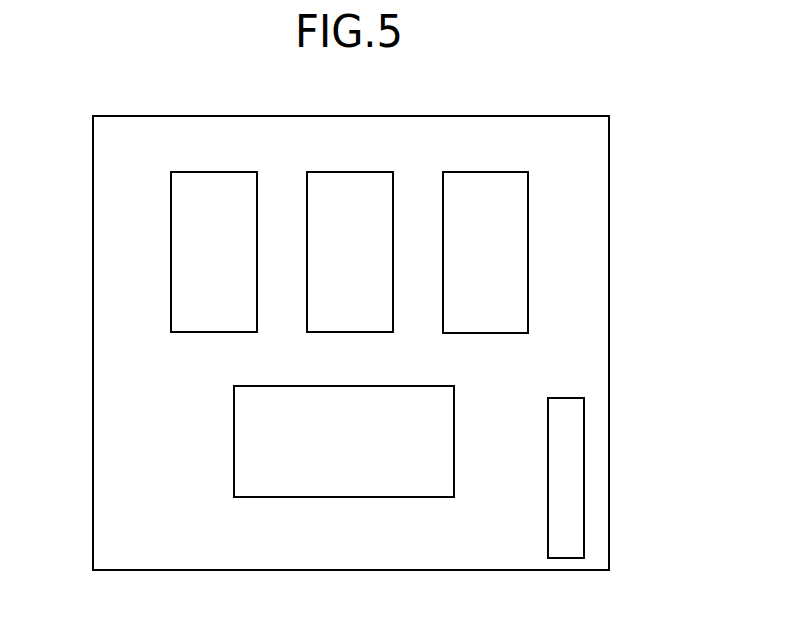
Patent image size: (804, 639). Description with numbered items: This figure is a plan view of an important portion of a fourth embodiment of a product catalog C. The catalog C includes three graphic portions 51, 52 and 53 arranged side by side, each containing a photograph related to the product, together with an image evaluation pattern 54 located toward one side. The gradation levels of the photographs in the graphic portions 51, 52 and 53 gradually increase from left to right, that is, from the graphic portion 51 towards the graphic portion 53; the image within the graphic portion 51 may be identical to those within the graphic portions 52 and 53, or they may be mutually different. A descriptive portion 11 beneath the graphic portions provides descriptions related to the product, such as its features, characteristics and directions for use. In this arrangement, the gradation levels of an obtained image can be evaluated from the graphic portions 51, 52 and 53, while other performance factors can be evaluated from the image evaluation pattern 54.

The product catalog C is at (621, 176).
The graphic portion 51 is at (228, 170).
The graphic portion 52 is at (363, 171).
The graphic portion 53 is at (498, 171).
The image evaluation pattern 54 is at (565, 396).
The descriptive portion 11 is at (308, 498).